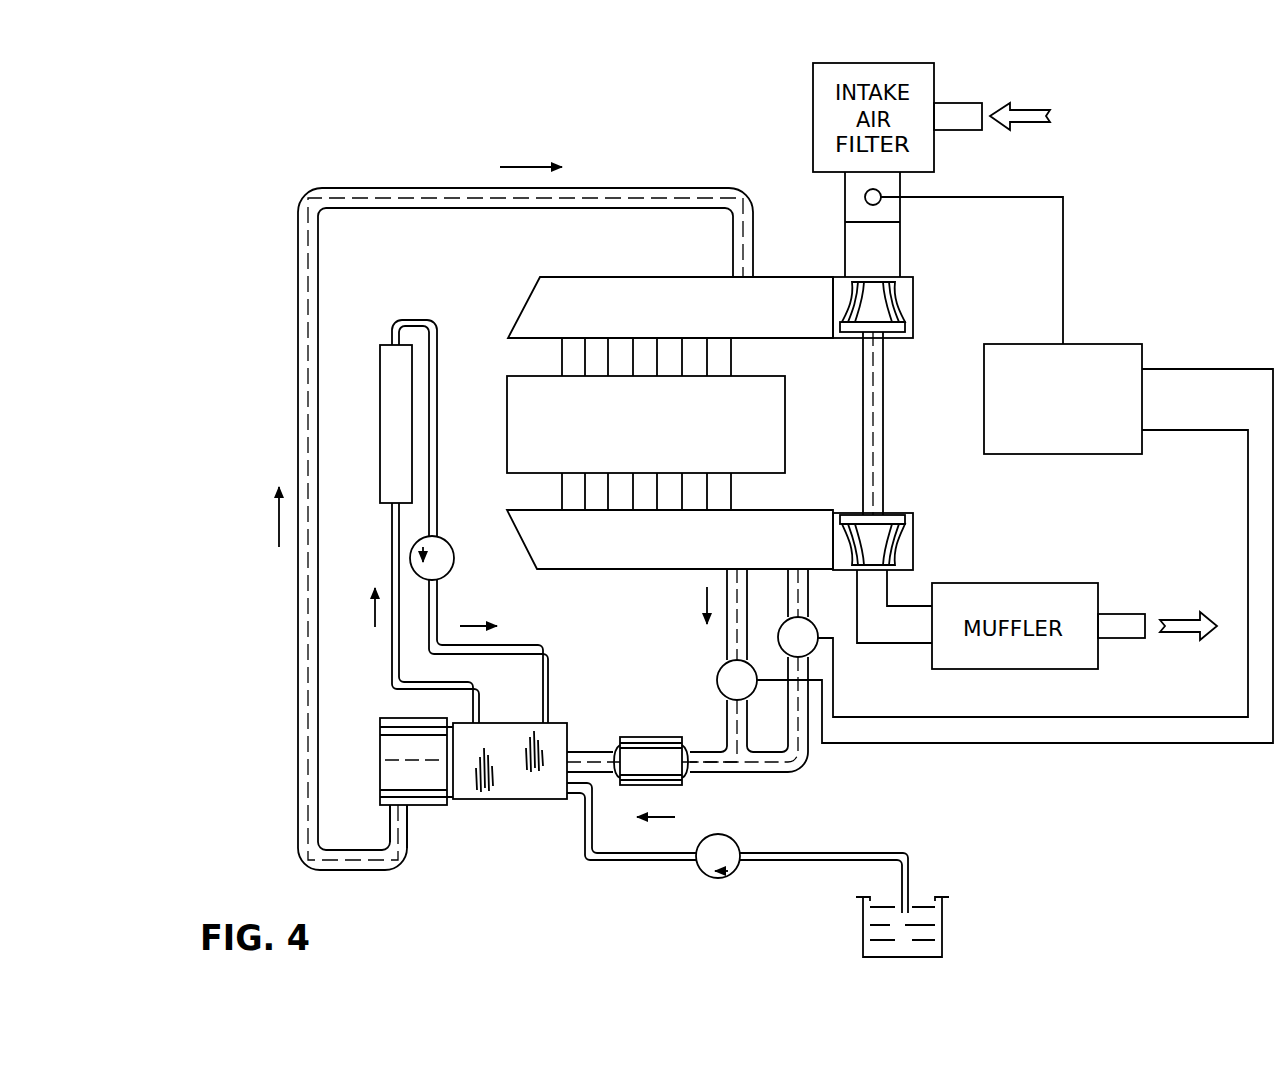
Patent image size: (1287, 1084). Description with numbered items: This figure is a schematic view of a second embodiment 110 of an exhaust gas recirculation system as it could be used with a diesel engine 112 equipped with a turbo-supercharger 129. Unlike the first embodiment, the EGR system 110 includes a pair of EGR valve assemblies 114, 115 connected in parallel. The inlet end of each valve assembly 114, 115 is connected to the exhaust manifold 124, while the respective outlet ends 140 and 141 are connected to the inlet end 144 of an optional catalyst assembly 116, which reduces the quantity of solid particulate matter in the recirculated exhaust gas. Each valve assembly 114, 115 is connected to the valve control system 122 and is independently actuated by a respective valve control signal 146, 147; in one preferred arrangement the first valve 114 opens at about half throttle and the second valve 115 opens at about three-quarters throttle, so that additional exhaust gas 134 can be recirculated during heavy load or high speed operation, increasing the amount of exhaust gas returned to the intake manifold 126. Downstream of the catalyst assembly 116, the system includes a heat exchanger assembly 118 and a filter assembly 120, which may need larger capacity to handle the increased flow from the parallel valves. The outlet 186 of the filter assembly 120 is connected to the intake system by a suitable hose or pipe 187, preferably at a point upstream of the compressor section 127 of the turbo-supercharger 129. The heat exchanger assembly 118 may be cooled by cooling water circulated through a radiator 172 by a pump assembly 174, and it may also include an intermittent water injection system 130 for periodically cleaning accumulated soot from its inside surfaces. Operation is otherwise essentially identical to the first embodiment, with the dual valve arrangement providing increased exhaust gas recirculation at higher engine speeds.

The second embodiment of the EGR system 110 is at (248, 146).
The diesel engine 112 is at (792, 427).
The first valve assembly 114 is at (708, 667).
The second valve assembly 115 is at (818, 627).
The catalyst assembly 116 is at (632, 729).
The heat exchanger assembly 118 is at (528, 808).
The filter assembly 120 is at (434, 812).
The valve control system 122 is at (1066, 460).
The exhaust manifold 124 is at (660, 570).
The intake manifold 126 is at (605, 277).
The compressor section 127 is at (918, 306).
The turbo-supercharger 129 is at (888, 421).
The intermittent water injection system 130 is at (619, 868).
The exhaust gas 134 is at (1180, 611).
The outlet end of first valve assembly 140 is at (725, 722).
The outlet end of second valve assembly 141 is at (806, 766).
The inlet end of catalyst assembly 144 is at (690, 778).
The first valve control signal 146 is at (1095, 743).
The second valve control signal 147 is at (1095, 717).
The radiator 172 is at (388, 343).
The pump assembly 174 is at (451, 573).
The outlet of filter assembly 186 is at (390, 832).
The hose or pipe 187 is at (298, 350).